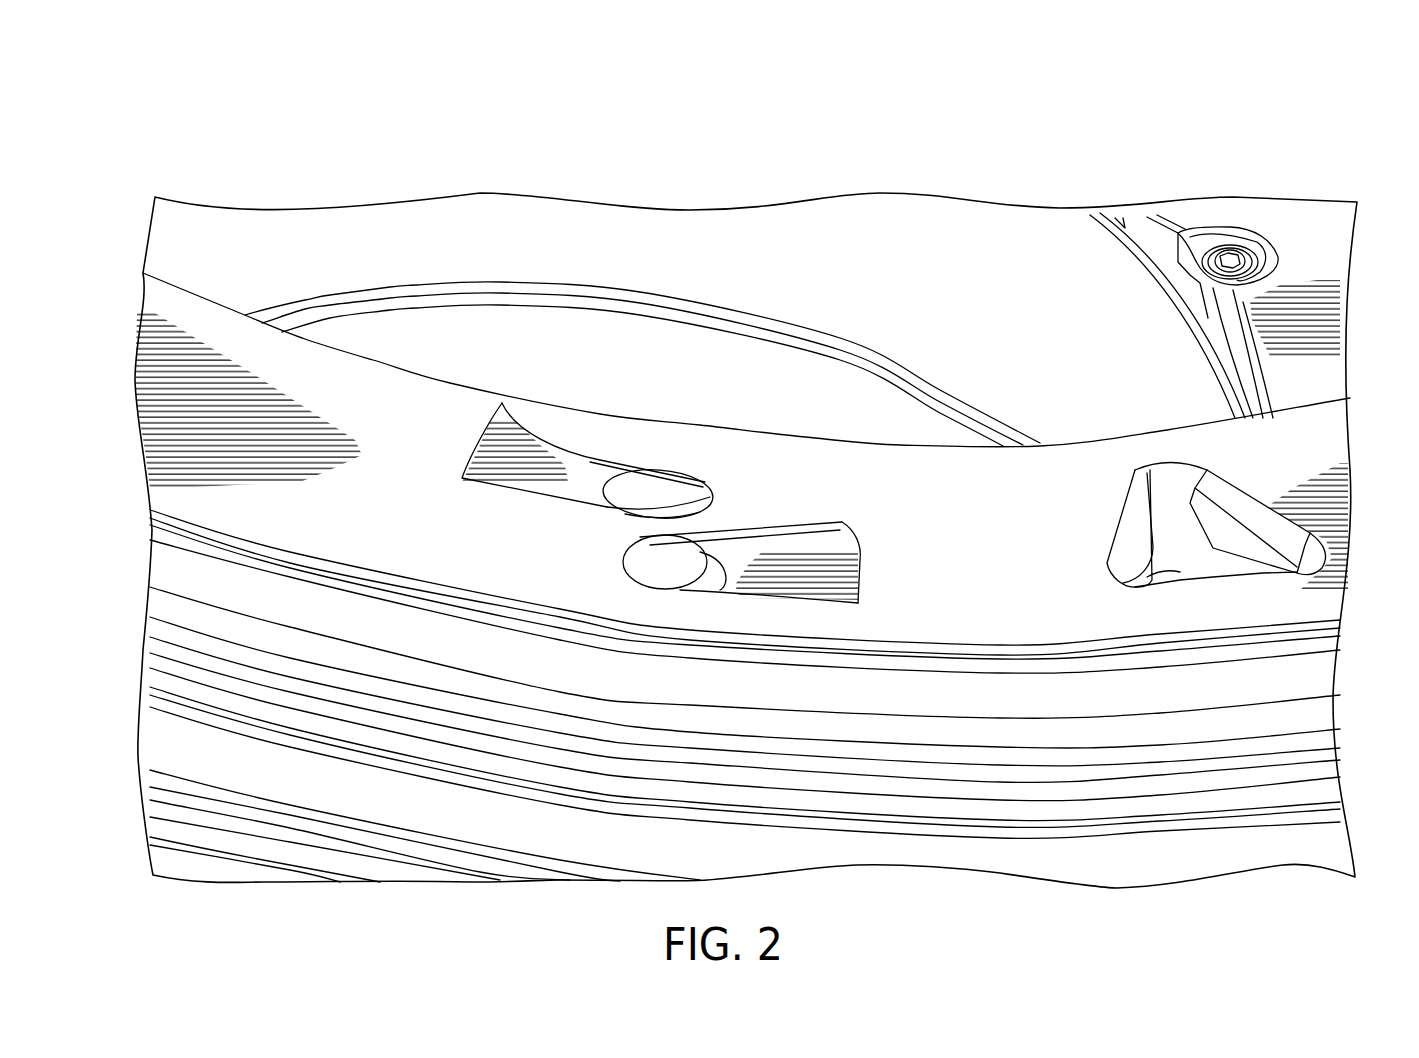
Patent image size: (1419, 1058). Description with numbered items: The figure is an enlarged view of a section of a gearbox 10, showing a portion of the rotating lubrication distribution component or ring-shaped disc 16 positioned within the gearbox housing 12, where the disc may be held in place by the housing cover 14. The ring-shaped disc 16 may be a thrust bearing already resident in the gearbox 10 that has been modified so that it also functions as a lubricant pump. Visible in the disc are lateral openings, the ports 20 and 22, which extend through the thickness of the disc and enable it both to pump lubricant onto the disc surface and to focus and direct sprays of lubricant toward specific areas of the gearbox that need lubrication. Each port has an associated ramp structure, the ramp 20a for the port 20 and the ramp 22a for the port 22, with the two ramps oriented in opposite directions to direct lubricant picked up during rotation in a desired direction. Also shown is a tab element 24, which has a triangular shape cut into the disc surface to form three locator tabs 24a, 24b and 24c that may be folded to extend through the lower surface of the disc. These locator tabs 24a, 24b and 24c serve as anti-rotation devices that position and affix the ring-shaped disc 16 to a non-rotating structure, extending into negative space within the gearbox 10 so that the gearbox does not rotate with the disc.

The gearbox 10 is at (1172, 158).
The housing 12 is at (183, 754).
The housing cover 14 is at (1280, 373).
The rotating lubrication distribution component 16 is at (253, 425).
The port 20 is at (647, 482).
The ramp structure 20a is at (577, 477).
The port 22 is at (660, 558).
The ramp structure 22a is at (817, 560).
The tab element 24 is at (1218, 528).
The locator tab 24a is at (1172, 578).
The locator tab 24b is at (1138, 552).
The locator tab 24c is at (1217, 517).